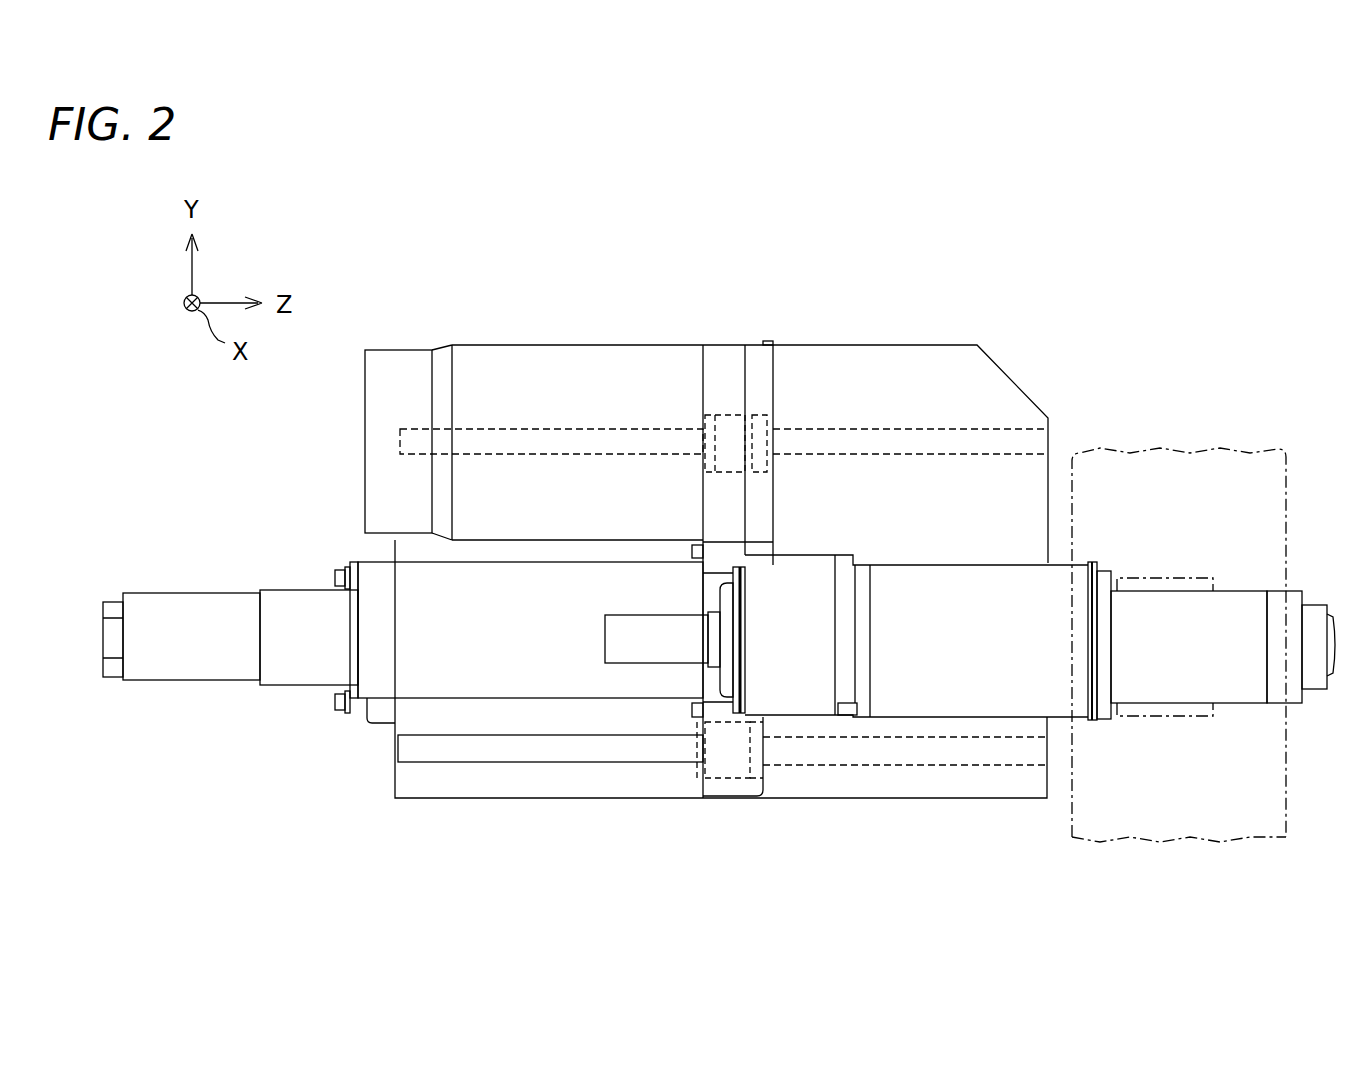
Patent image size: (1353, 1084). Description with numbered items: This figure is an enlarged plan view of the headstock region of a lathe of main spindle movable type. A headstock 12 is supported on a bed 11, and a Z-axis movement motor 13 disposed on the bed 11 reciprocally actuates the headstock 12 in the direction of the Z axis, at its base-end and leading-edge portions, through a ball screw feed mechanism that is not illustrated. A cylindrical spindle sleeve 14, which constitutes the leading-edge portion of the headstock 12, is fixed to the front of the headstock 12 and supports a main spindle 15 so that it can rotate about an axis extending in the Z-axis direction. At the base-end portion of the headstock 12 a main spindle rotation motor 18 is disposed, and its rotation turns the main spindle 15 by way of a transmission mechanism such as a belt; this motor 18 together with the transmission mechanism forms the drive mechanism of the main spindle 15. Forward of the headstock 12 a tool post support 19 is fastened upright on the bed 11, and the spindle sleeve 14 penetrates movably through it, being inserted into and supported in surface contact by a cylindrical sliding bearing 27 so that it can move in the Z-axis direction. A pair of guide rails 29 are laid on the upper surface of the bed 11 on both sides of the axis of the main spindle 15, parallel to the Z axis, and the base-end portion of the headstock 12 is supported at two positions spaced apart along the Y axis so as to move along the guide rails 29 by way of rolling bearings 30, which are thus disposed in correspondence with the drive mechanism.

The bed 11 is at (458, 790).
The headstock 12 is at (933, 571).
The Z-axis movement motor 13 is at (193, 602).
The spindle sleeve 14 is at (1243, 591).
The main spindle 15 is at (1316, 600).
The main spindle rotation motor 18 is at (636, 357).
The tool post support 19 is at (1288, 828).
The sliding bearing 27 is at (1170, 718).
The guide rails 29 is at (582, 457).
The rolling bearings 30 is at (760, 472).